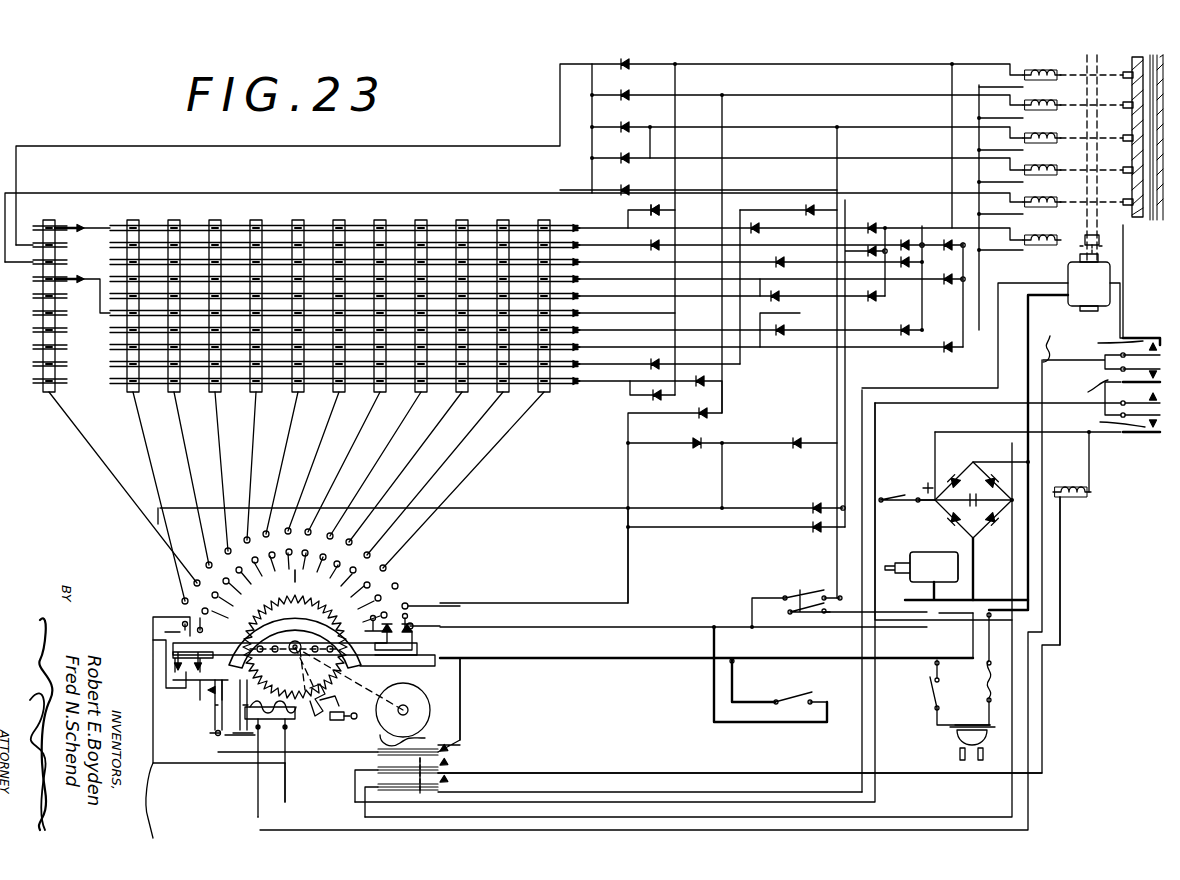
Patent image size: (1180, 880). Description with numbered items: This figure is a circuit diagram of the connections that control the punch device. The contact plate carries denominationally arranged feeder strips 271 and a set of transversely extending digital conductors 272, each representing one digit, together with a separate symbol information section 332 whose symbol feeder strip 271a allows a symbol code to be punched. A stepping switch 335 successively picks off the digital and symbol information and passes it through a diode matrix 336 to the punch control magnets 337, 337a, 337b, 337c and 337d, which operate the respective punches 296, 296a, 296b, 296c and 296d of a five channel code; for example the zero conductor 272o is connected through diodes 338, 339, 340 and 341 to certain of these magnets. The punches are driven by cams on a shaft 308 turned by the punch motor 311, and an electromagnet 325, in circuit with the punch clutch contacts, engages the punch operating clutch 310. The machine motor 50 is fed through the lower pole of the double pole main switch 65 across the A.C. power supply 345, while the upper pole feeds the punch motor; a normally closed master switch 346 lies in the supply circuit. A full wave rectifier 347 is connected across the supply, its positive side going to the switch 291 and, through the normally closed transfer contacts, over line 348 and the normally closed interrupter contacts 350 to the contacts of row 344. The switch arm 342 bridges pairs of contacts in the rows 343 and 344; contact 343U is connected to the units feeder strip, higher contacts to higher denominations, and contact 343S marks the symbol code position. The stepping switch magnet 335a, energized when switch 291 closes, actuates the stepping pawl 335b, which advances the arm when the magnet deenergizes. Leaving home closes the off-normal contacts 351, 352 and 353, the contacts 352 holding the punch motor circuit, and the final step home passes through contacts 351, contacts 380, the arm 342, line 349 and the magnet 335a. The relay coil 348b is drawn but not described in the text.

The symbol feeder strip 271a is at (72, 180).
The symbol information section 332 is at (92, 220).
The digital conductors 272 is at (354, 239).
The zero conductor 272o is at (480, 222).
The feeder strips 271 is at (545, 217).
The diode 338 is at (646, 210).
The diode matrix 336 is at (795, 184).
The diode 339 is at (755, 225).
The diode 340 is at (810, 203).
The diode 341 is at (880, 220).
The punch control magnet 337 is at (1020, 75).
The punch control magnet 337a is at (1020, 105).
The punch control magnet 337b is at (1020, 138).
The punch control magnet 337c is at (1020, 170).
The punch control magnet 337d is at (1020, 202).
The electromagnet 325 is at (1018, 228).
The punch 296 is at (1127, 75).
The punch 296a is at (1131, 107).
The punch 296b is at (1131, 140).
The punch 296c is at (1131, 172).
The punch 296d is at (1131, 204).
The shaft 308 is at (1110, 218).
The punch operating clutch 310 is at (1080, 246).
The punch motor 311 is at (1105, 290).
The line 348 is at (263, 830).
The relay coil 348b is at (1072, 537).
The full wave rectifier 347 is at (955, 464).
The switch 291 is at (920, 463).
The electric motor 50 is at (930, 562).
The double pole motor switch 65 is at (795, 590).
The master switch 346 is at (935, 692).
The A.C. power supply 345 is at (955, 732).
The contact 343S is at (190, 583).
The contact row 343 is at (182, 601).
The contact row 344 is at (202, 612).
The switch arm 342 is at (173, 644).
The contacts 380 is at (193, 705).
The interrupter contacts 350 is at (242, 725).
The stepping switch magnet 335a is at (285, 722).
The stepping pawl 335b is at (313, 715).
The line 349 is at (161, 800).
The contacts 351 is at (448, 748).
The contacts 352 is at (448, 766).
The contacts 353 is at (448, 786).
The stepping switch 335 is at (405, 588).
The contact 343U is at (415, 580).